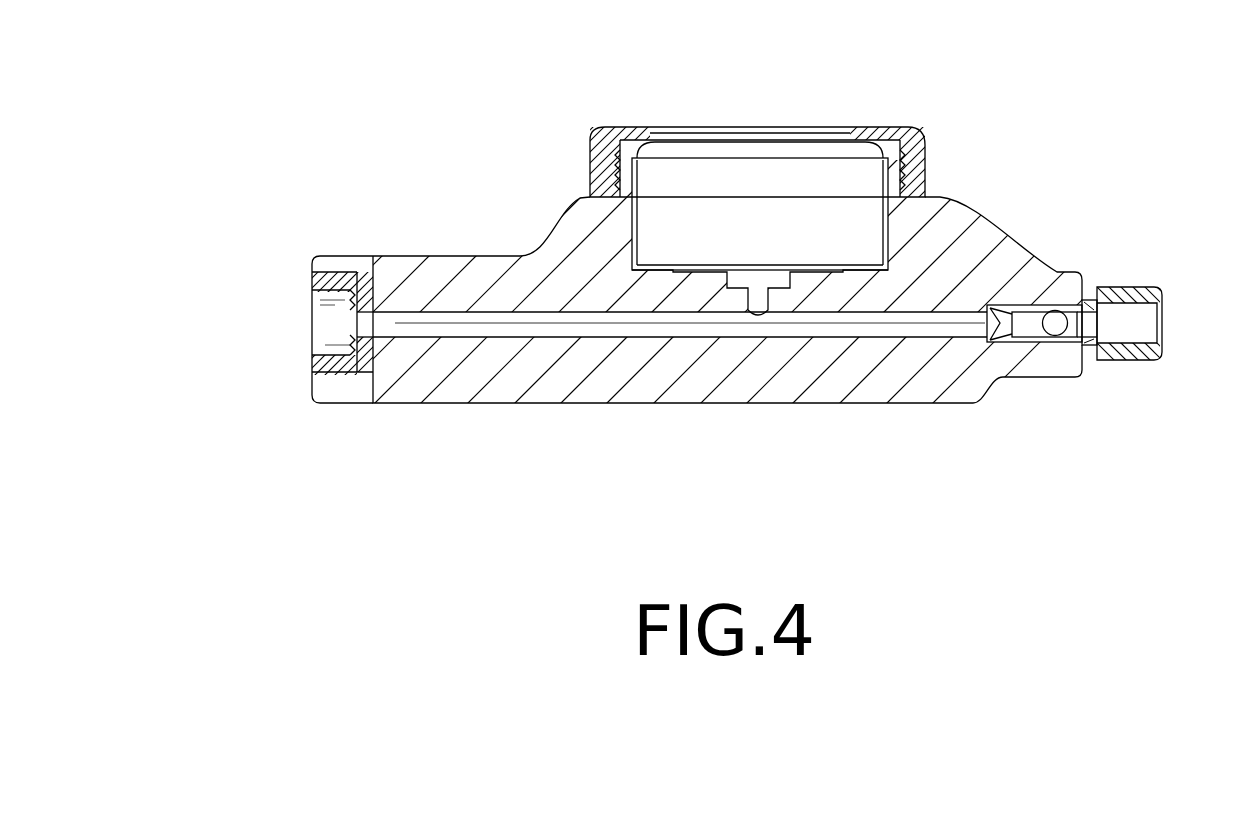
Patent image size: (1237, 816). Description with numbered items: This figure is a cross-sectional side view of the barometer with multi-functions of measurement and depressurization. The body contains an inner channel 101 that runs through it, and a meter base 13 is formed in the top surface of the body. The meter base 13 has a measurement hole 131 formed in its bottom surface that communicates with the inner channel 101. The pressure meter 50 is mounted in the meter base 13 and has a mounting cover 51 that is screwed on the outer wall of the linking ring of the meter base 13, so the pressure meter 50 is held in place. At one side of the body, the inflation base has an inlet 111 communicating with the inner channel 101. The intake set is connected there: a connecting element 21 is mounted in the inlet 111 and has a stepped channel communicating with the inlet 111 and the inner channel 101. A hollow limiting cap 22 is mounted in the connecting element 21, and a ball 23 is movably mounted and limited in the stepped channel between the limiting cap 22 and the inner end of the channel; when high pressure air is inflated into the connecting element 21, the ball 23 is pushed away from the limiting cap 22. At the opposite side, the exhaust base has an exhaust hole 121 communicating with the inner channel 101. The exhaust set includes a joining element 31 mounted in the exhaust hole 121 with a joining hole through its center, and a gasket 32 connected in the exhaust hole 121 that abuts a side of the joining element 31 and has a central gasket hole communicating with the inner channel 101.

The meter base 13 is at (618, 242).
The inner channel 101 is at (682, 330).
The measurement hole 131 is at (777, 282).
The pressure meter 50 is at (775, 152).
The mounting cover 51 is at (625, 133).
The exhaust hole 121 is at (323, 272).
The joining element 31 is at (315, 368).
The gasket 32 is at (365, 376).
The inlet 111 is at (1082, 290).
The connecting element 21 is at (1140, 290).
The limiting cap 22 is at (1085, 338).
The ball 23 is at (1057, 330).